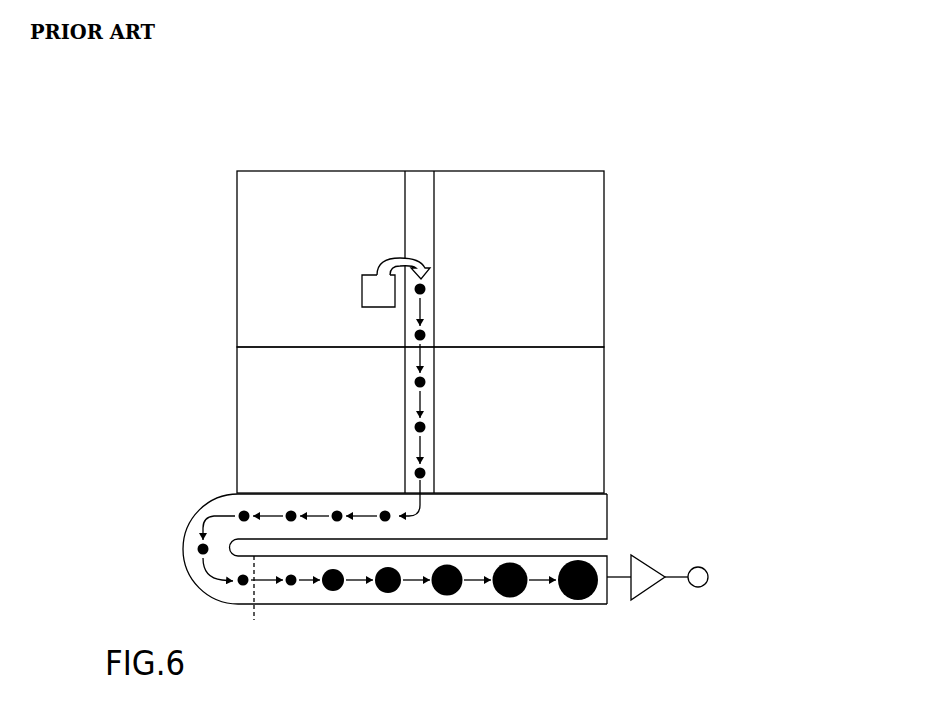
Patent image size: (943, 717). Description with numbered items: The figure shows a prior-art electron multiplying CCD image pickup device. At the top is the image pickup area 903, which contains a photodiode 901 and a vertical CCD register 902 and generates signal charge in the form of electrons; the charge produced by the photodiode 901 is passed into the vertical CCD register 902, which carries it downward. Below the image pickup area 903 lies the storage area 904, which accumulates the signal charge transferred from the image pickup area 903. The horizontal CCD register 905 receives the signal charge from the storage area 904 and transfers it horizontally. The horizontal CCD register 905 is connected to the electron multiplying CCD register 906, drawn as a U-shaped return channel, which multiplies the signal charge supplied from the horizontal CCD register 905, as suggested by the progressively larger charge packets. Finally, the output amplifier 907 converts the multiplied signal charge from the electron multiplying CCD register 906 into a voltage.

The photodiode 901 is at (375, 293).
The vertical CCD register 902 is at (417, 176).
The image pickup area 903 is at (588, 218).
The storage area 904 is at (590, 375).
The horizontal CCD register 905 is at (593, 508).
The electron multiplying CCD register 906 is at (253, 608).
The output amplifier 907 is at (655, 592).